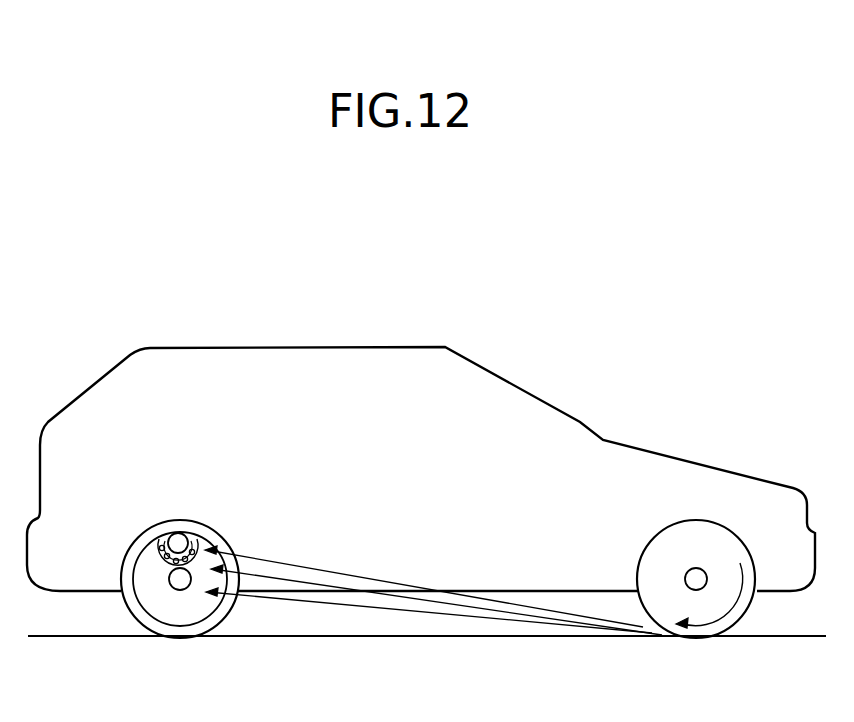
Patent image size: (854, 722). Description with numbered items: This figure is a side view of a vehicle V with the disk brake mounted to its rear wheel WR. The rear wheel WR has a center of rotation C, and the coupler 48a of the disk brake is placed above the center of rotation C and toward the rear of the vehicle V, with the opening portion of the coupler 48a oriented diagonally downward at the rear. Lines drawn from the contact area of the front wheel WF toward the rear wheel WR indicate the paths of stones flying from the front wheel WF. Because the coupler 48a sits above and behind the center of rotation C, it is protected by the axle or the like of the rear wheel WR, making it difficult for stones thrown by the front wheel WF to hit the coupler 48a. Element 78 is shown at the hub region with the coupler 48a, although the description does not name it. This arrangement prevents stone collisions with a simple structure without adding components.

The vehicle V is at (365, 346).
The rear wheel WR is at (170, 628).
The front wheel WF is at (665, 550).
The center of rotation C is at (180, 582).
The sensor unit 78 is at (178, 538).
The coupler 48a is at (163, 548).